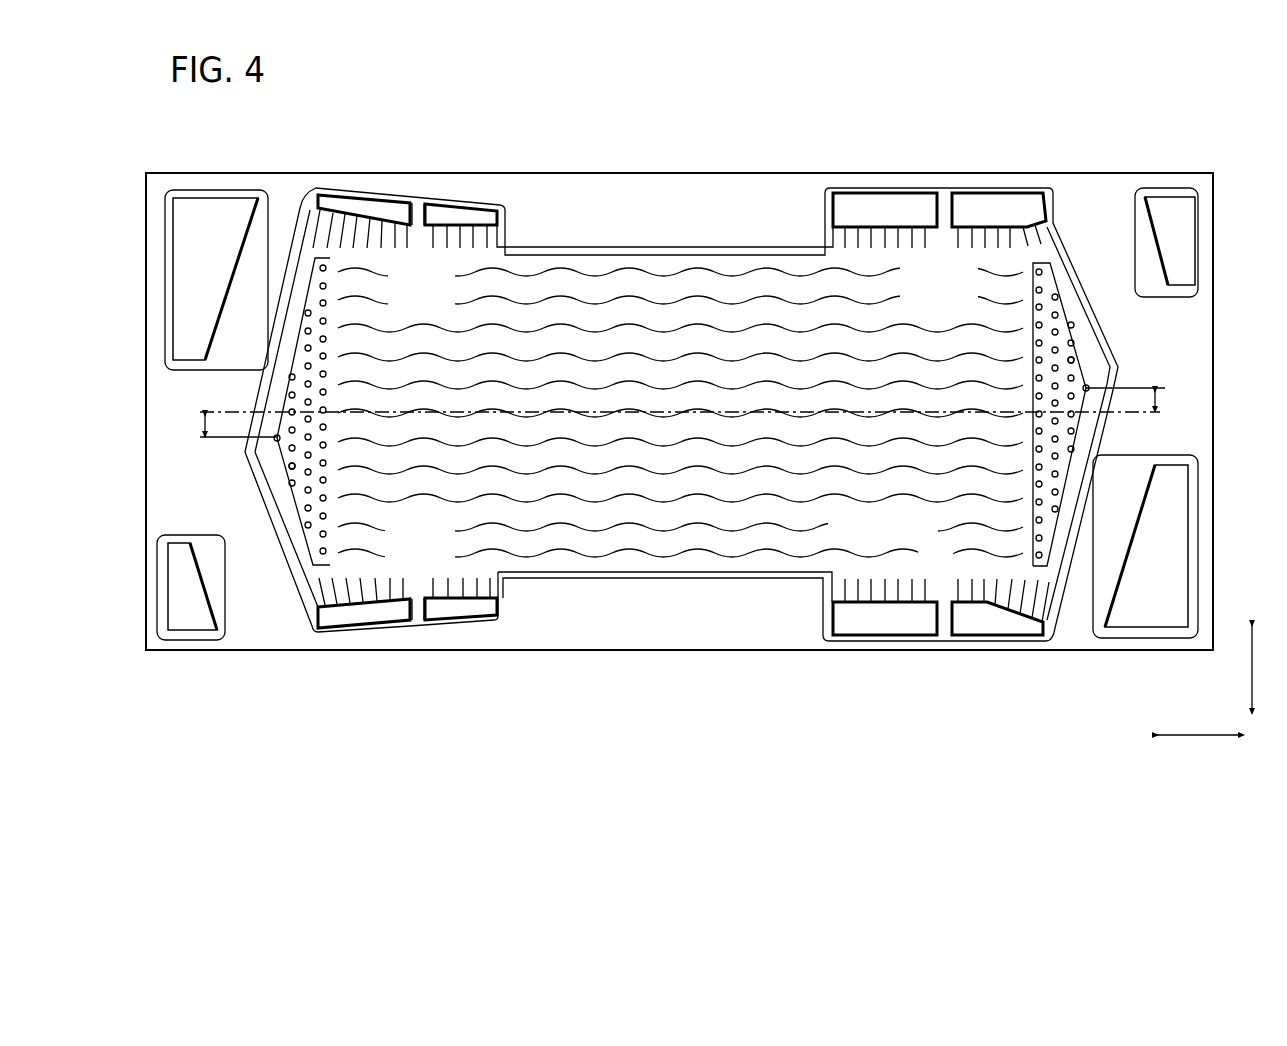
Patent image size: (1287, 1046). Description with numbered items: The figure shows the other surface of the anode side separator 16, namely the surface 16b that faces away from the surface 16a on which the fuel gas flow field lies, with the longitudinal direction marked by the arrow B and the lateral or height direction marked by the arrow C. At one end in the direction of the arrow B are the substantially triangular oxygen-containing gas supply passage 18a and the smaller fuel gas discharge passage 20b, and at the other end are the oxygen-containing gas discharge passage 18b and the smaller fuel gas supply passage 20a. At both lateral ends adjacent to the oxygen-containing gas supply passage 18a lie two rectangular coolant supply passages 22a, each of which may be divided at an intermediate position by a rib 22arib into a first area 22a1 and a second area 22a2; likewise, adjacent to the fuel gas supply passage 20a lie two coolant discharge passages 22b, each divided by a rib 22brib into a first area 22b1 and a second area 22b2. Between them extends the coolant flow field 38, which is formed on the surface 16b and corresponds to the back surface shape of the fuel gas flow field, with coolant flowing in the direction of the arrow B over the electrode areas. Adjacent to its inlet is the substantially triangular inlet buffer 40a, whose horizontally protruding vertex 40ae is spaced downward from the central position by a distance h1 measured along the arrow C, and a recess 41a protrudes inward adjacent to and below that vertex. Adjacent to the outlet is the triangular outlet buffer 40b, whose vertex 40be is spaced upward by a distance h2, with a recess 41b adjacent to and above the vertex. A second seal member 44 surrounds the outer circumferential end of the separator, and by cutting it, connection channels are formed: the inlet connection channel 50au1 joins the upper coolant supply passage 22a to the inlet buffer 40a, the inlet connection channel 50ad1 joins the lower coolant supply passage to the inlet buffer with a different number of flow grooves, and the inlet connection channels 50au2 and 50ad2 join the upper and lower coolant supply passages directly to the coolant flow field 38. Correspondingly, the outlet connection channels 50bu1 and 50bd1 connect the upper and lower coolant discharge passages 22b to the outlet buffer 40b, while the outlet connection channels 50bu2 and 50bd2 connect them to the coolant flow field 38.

The anode side separator 16 is at (553, 97).
The surface of the anode side separator 16a is at (727, 640).
The surface of the anode side separator 16b is at (657, 637).
The oxygen-containing gas supply passage 18a is at (200, 218).
The oxygen-containing gas discharge passage 18b is at (1142, 608).
The fuel gas supply passage 20a is at (1170, 215).
The fuel gas discharge passage 20b is at (192, 607).
The coolant supply passage 22a is at (407, 412).
The first area 22a1 is at (372, 210).
The second area 22a2 is at (437, 210).
The rib 22arib is at (418, 226).
The coolant discharge passage 22b is at (939, 412).
The first area 22b1 is at (972, 208).
The second area 22b2 is at (895, 208).
The rib 22brib is at (944, 228).
The coolant flow field 38 is at (680, 444).
The second seal member 44 is at (702, 560).
The inlet buffer 40a is at (240, 411).
The vertex 40ae is at (276, 441).
The recess 41a is at (303, 507).
The outlet buffer 40b is at (1112, 414).
The vertex 40be is at (1089, 389).
The recess 41b is at (1074, 362).
The inlet connection channel 50au1 is at (320, 205).
The inlet connection channel 50au2 is at (503, 240).
The inlet connection channel 50ad1 is at (312, 596).
The inlet connection channel 50ad2 is at (483, 590).
The outlet connection channel 50bu1 is at (1033, 236).
The outlet connection channel 50bu2 is at (853, 243).
The outlet connection channel 50bd1 is at (1015, 625).
The outlet connection channel 50bd2 is at (853, 590).
The distance h1 is at (226, 426).
The distance h2 is at (1135, 402).
The arrow B is at (1199, 745).
The arrow C is at (1261, 668).